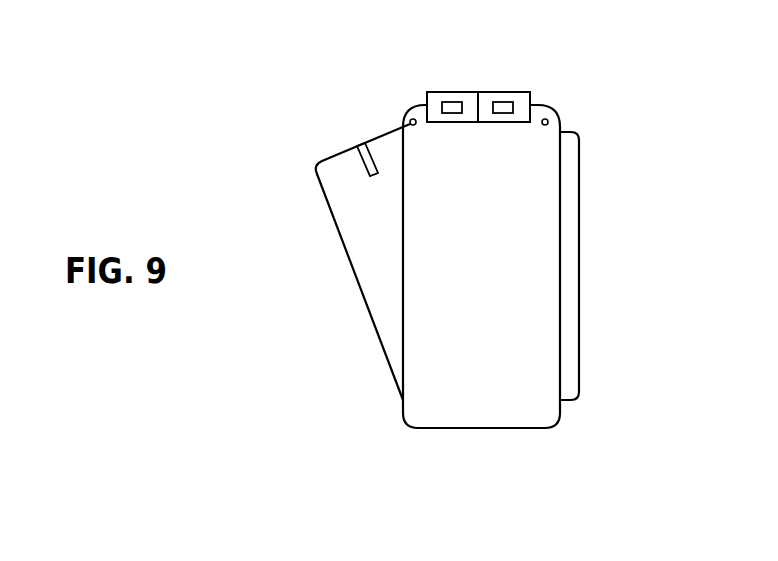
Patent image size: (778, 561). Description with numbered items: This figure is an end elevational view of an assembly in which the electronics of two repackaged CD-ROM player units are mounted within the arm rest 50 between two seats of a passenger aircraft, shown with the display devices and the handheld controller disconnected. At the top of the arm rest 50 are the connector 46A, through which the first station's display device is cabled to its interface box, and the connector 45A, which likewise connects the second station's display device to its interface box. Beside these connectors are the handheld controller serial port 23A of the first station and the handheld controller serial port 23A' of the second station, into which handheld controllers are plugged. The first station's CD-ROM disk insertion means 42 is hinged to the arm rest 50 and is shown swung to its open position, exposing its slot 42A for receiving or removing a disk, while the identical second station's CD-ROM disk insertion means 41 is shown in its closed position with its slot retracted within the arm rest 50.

The arm rest 50 is at (405, 420).
The connector 46A is at (447, 101).
The connector 45A is at (505, 101).
The handheld controller serial port 23A is at (359, 101).
The handheld controller serial port 23A' is at (604, 108).
The CD-ROM disk insertion means 41 is at (578, 325).
The CD-ROM disk insertion means 42 is at (357, 293).
The slot 42A is at (346, 140).